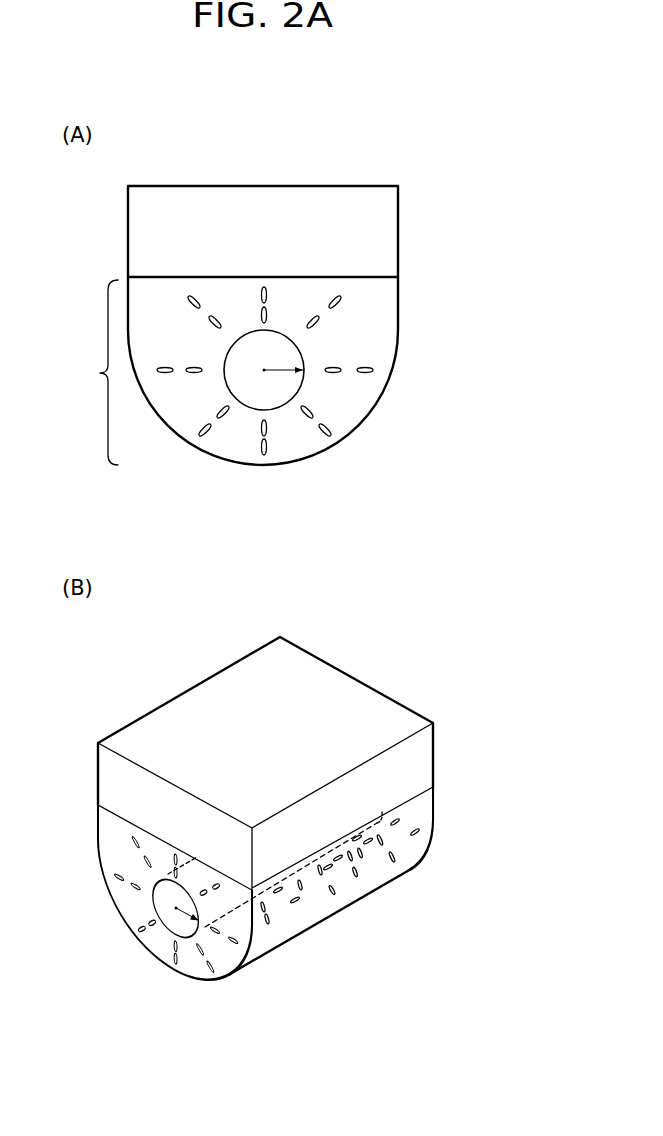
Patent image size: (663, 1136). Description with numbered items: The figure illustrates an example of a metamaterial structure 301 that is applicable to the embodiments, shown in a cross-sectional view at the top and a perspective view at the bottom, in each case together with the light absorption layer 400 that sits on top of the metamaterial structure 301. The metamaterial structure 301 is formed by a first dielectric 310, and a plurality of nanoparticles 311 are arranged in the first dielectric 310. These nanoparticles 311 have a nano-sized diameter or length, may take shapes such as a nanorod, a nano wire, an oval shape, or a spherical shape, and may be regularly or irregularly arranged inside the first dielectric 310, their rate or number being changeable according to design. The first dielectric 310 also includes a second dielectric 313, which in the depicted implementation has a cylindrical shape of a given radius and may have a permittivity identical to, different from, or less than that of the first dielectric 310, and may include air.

The light absorption layer 400 is at (398, 233).
The first dielectric 310 is at (397, 312).
The metamaterial structure 301 is at (89, 372).
The nanoparticles 311 is at (372, 376).
The second dielectric 313 is at (278, 395).